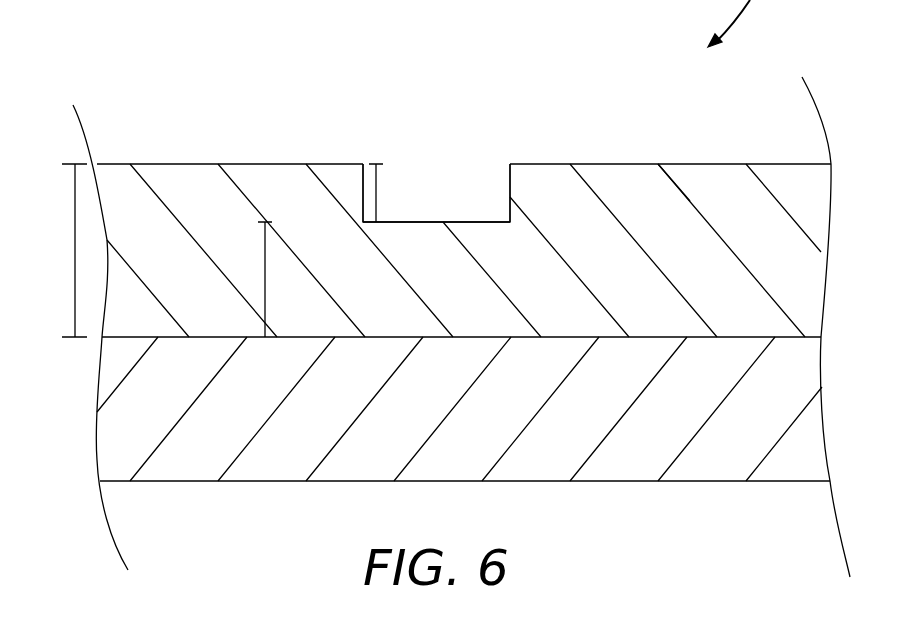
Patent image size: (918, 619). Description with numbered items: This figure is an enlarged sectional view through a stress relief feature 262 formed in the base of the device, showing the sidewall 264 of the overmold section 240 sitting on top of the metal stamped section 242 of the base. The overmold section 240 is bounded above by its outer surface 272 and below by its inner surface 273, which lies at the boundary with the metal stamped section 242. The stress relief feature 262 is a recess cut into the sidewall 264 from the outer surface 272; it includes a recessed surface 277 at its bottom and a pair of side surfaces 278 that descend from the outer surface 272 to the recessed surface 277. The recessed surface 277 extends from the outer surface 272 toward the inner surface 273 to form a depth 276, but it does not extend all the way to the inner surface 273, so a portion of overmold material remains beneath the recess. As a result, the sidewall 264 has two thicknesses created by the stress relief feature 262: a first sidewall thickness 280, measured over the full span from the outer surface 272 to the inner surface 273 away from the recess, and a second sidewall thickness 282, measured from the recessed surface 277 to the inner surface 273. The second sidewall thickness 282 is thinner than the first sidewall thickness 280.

The overmold section 240 is at (727, 192).
The metal stamped section 242 is at (715, 435).
The stress relief feature 262 is at (462, 150).
The sidewall 264 is at (657, 192).
The outer surface 272 is at (248, 163).
The inner surface 273 is at (438, 343).
The depth 276 is at (376, 190).
The recessed surface 277 is at (428, 222).
The side surfaces 278 is at (362, 198).
The first sidewall thickness 280 is at (73, 227).
The second sidewall thickness 282 is at (262, 248).